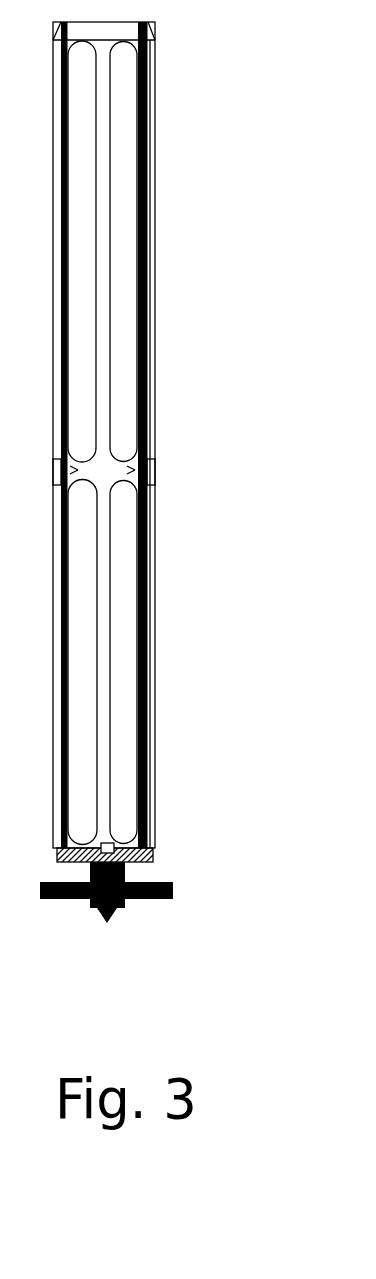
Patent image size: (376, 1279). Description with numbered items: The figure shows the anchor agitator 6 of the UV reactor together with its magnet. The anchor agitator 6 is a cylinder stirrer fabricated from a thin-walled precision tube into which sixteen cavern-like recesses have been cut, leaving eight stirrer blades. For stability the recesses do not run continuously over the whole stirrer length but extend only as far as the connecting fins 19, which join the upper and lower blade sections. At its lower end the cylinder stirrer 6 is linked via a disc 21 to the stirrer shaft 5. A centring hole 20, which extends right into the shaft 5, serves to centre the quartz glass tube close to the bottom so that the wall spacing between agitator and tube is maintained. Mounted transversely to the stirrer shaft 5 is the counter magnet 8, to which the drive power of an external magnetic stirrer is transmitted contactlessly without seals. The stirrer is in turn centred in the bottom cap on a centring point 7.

The anchor agitator 6 is at (148, 337).
The connecting fins 19 is at (103, 468).
The centring hole 20 is at (113, 845).
The disc 21 is at (122, 860).
The stirrer shaft 5 is at (127, 870).
The counter magnet 8 is at (173, 889).
The centring point 7 is at (110, 917).